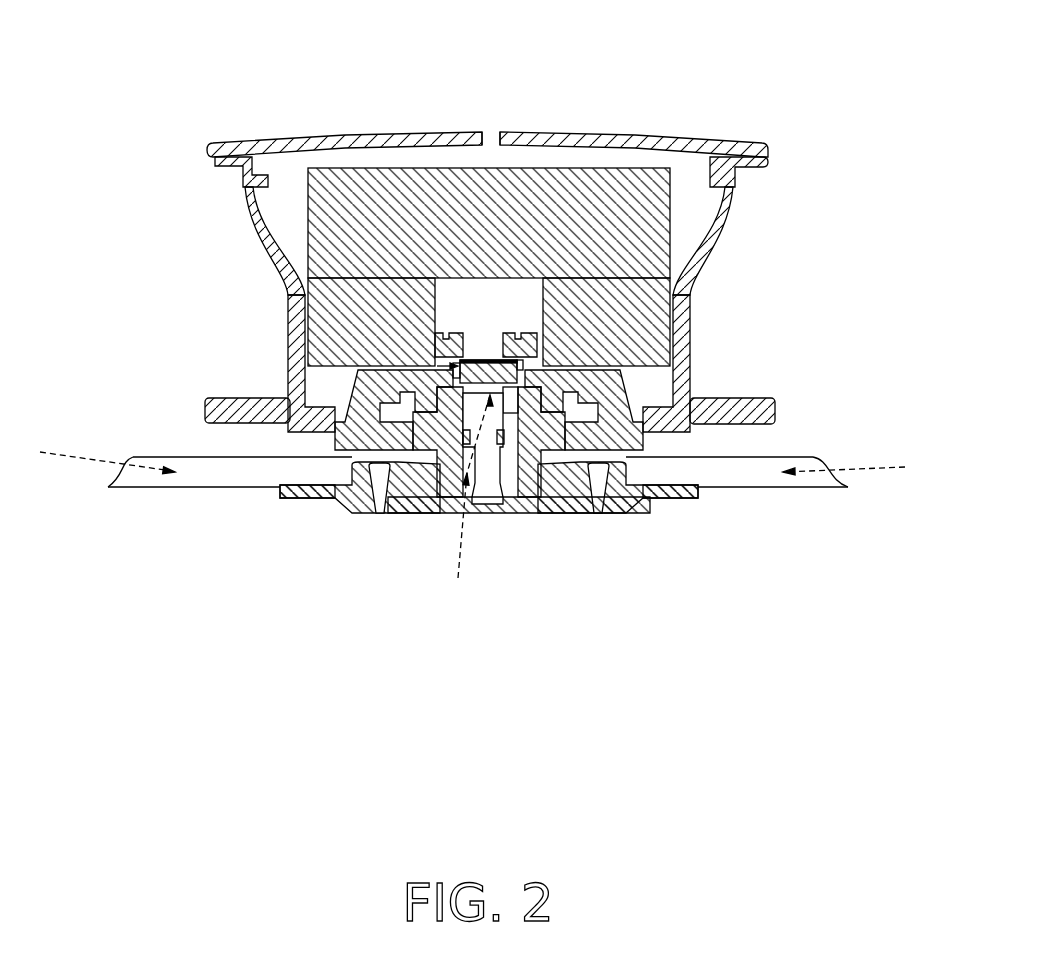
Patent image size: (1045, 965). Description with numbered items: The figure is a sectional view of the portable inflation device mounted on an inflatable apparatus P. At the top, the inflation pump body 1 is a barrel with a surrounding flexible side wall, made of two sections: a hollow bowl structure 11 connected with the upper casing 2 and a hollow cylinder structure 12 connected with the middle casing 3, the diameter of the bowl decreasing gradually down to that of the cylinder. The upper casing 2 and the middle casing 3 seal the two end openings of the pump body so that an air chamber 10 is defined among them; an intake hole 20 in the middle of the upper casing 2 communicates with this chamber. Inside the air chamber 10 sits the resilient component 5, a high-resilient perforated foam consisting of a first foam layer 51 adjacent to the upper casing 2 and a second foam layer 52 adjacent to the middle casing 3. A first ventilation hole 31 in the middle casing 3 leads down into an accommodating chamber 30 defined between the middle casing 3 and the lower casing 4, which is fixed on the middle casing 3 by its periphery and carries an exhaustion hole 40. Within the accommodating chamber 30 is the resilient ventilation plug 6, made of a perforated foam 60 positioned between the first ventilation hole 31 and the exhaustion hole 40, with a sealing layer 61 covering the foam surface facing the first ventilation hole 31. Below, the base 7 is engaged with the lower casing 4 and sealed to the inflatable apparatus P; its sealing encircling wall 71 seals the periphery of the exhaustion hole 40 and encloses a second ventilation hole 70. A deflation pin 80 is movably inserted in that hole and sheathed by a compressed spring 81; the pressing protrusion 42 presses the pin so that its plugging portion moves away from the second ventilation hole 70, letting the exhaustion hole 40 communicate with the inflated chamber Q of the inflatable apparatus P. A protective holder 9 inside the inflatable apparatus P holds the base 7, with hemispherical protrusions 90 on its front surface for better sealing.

The inflation pump body 1 is at (481, 232).
The upper casing 2 is at (293, 140).
The middle casing 3 is at (772, 410).
The lower casing 4 is at (382, 500).
The resilient component 5 is at (517, 189).
The resilient ventilation plug 6 is at (525, 338).
The base 7 is at (654, 527).
The protective holder 9 is at (300, 498).
The air chamber 10 is at (688, 185).
The hollow bowl structure 11 is at (253, 228).
The hollow cylinder structure 12 is at (290, 330).
The intake hole 20 is at (490, 140).
The accommodating chamber 30 is at (436, 374).
The first ventilation hole 31 is at (483, 347).
The exhaustion hole 40 is at (493, 470).
The pressing protrusion 42 is at (532, 482).
The first foam layer 51 is at (425, 205).
The second foam layer 52 is at (332, 312).
The perforated foam 60 is at (385, 420).
The sealing layer 61 is at (539, 353).
The second ventilation hole 70 is at (470, 460).
The sealing encircling wall 71 is at (655, 503).
The deflation pin 80 is at (467, 503).
The spring 81 is at (440, 478).
The hemispherical protrusions 90 is at (327, 549).
The inflatable apparatus P is at (813, 457).
The inflated chamber Q is at (477, 461).